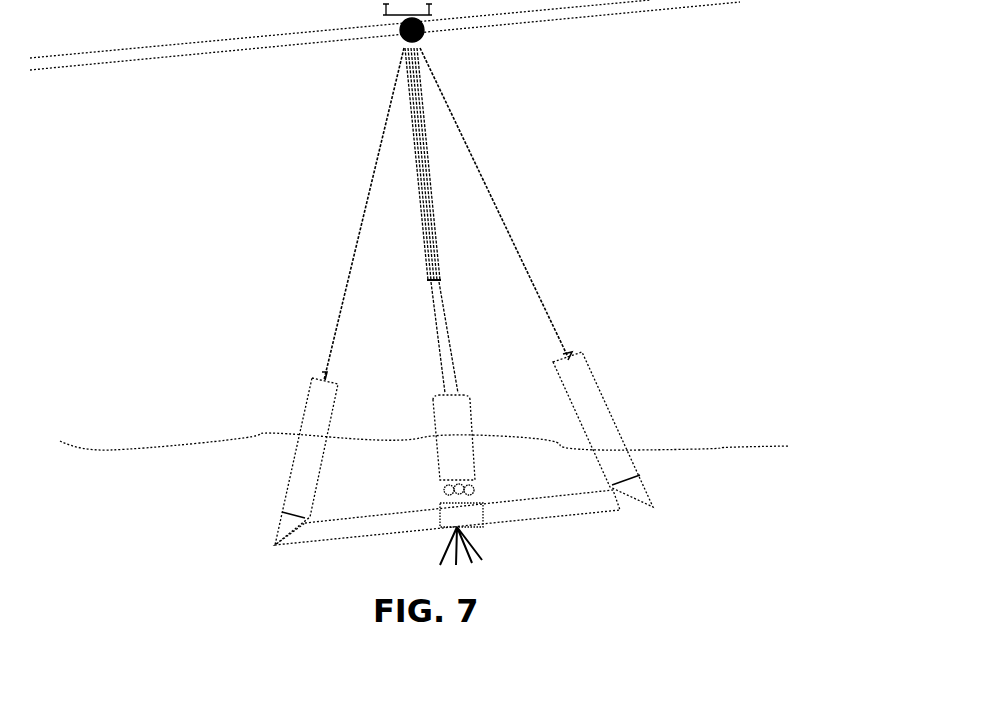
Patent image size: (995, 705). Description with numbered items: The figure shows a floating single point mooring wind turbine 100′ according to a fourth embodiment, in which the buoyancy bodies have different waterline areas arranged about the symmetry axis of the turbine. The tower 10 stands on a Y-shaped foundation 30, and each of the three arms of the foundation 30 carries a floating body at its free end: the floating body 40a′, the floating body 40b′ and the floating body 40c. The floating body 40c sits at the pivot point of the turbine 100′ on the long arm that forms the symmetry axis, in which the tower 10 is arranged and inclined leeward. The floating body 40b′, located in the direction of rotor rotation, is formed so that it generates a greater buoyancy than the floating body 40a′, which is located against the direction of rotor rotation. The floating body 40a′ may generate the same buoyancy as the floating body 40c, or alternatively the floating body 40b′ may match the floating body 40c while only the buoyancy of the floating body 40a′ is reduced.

The tower 10 is at (424, 127).
The single point mooring wind turbine 100′ is at (205, 244).
The floating body 40a′ is at (300, 460).
The floating body 40b′ is at (590, 402).
The floating body 40c is at (462, 452).
The foundation 30 is at (335, 538).